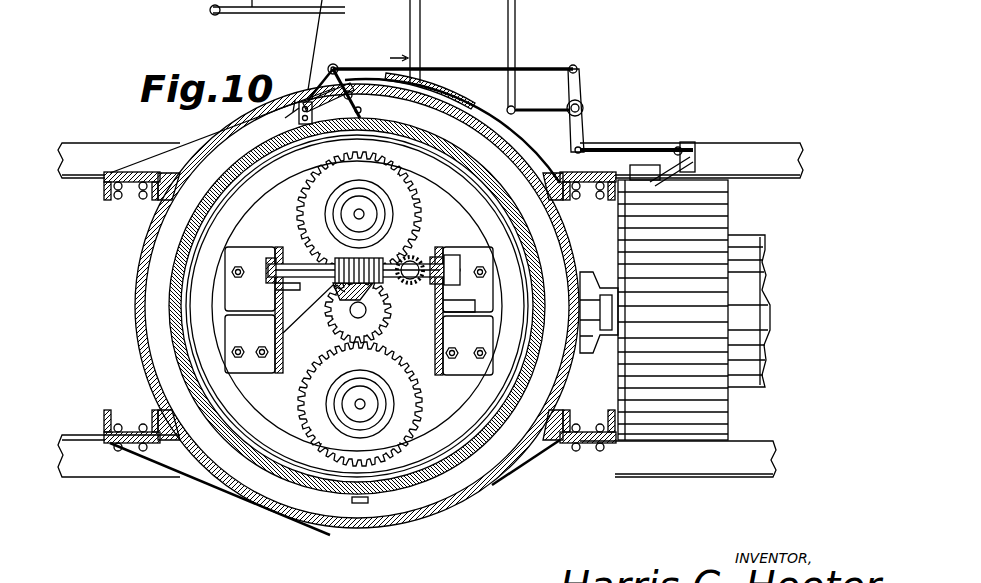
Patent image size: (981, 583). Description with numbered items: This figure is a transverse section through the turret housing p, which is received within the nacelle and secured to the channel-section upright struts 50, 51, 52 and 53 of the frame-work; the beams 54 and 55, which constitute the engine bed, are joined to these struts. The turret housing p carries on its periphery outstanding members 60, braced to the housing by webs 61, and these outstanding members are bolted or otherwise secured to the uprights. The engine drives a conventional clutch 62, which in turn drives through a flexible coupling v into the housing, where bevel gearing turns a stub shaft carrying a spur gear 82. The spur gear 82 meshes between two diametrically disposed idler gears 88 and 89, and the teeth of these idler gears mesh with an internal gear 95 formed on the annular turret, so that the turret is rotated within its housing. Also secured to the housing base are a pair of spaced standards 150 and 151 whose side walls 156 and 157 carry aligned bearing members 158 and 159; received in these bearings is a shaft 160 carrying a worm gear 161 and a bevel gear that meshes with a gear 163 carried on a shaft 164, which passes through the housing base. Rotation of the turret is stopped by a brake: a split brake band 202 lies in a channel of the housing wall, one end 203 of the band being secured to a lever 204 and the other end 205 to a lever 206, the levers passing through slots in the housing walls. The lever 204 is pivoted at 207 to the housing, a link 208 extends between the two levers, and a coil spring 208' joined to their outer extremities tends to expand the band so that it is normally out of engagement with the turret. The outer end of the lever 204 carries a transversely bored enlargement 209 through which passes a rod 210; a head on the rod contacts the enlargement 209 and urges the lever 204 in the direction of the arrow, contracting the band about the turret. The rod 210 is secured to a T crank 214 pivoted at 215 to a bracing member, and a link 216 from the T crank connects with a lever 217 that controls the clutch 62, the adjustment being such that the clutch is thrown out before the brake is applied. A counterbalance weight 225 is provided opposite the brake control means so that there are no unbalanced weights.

The upright strut 50 is at (590, 200).
The upright strut 51 is at (128, 196).
The upright strut 52 is at (130, 427).
The upright strut 53 is at (587, 425).
The beam 54 is at (748, 150).
The beam 55 is at (703, 463).
The outstanding member 60 is at (167, 173).
The web 61 is at (180, 152).
The clutch 62 is at (698, 222).
The spur gear 82 is at (377, 332).
The idler gear 88 is at (400, 420).
The idler gear 89 is at (317, 188).
The internal gear 95 is at (428, 138).
The standard 150 is at (463, 365).
The standard 151 is at (252, 365).
The side wall 156 is at (284, 325).
The side wall 157 is at (435, 305).
The bearing member 158 is at (289, 262).
The bearing member 159 is at (445, 255).
The shaft 160 is at (300, 287).
The worm gear 161 is at (322, 263).
The gear 163 is at (417, 250).
The shaft 164 is at (413, 257).
The brake band 202 is at (178, 327).
The end of brake band 203 is at (373, 130).
The lever 204 is at (340, 66).
The end of brake band 205 is at (296, 128).
The lever 206 is at (293, 100).
The pivot 207 is at (417, 80).
The link 208 is at (285, 59).
The coil spring 208' is at (299, 45).
The enlargement 209 is at (337, 66).
The rod 210 is at (470, 66).
The T crank 214 is at (580, 98).
The pivot 215 is at (585, 109).
The link 216 is at (630, 147).
The lever 217 is at (682, 163).
The weight 225 is at (363, 505).
The turret housing P is at (462, 510).
The flexible coupling v is at (590, 285).